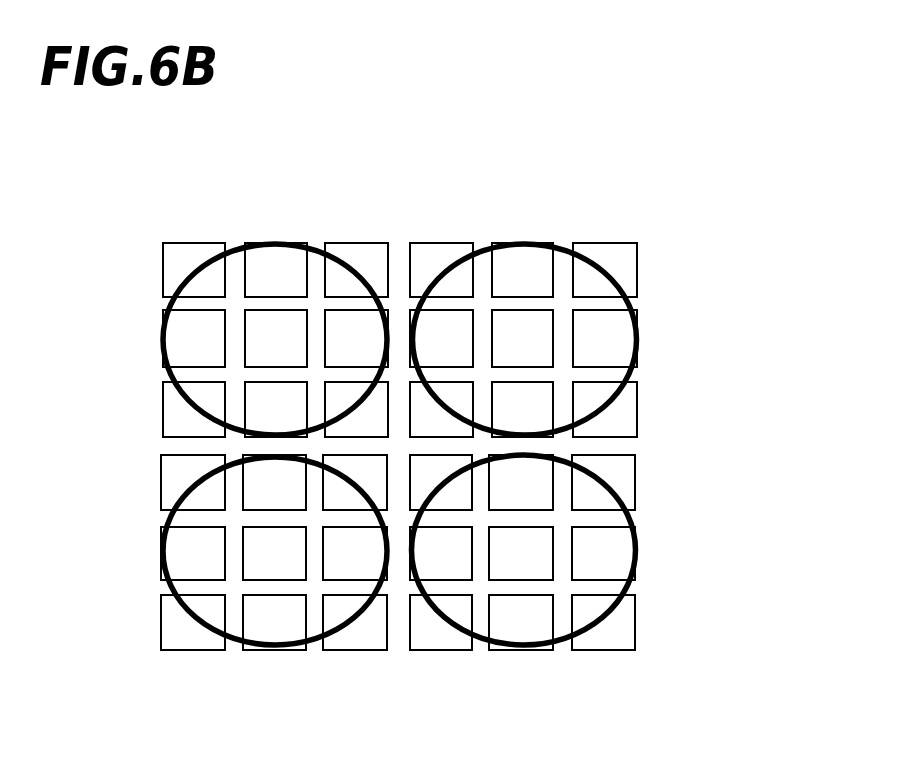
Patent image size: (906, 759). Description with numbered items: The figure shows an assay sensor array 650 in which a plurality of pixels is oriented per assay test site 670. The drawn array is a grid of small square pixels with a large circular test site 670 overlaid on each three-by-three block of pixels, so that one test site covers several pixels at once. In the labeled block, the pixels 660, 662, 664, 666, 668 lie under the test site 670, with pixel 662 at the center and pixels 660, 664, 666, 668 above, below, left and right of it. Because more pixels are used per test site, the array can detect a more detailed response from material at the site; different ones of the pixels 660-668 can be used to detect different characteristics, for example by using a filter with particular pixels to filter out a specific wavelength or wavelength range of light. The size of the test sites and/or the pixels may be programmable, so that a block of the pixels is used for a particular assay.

The assay sensor array 650 is at (112, 258).
The pixel 660 is at (541, 287).
The pixel 662 is at (542, 350).
The pixel 664 is at (541, 413).
The pixel 666 is at (468, 350).
The pixel 668 is at (620, 350).
The assay test site 670 is at (606, 272).